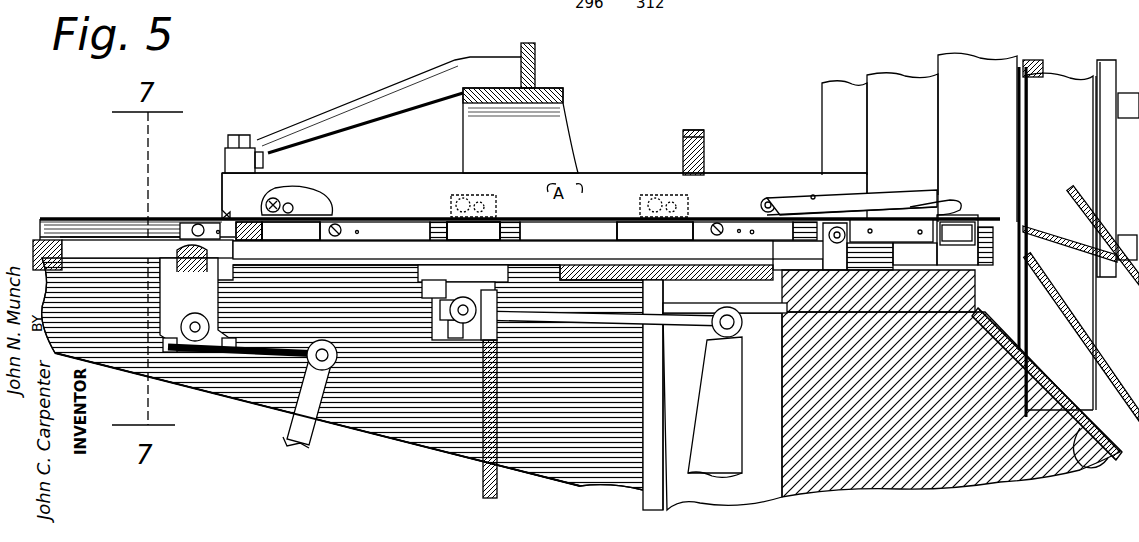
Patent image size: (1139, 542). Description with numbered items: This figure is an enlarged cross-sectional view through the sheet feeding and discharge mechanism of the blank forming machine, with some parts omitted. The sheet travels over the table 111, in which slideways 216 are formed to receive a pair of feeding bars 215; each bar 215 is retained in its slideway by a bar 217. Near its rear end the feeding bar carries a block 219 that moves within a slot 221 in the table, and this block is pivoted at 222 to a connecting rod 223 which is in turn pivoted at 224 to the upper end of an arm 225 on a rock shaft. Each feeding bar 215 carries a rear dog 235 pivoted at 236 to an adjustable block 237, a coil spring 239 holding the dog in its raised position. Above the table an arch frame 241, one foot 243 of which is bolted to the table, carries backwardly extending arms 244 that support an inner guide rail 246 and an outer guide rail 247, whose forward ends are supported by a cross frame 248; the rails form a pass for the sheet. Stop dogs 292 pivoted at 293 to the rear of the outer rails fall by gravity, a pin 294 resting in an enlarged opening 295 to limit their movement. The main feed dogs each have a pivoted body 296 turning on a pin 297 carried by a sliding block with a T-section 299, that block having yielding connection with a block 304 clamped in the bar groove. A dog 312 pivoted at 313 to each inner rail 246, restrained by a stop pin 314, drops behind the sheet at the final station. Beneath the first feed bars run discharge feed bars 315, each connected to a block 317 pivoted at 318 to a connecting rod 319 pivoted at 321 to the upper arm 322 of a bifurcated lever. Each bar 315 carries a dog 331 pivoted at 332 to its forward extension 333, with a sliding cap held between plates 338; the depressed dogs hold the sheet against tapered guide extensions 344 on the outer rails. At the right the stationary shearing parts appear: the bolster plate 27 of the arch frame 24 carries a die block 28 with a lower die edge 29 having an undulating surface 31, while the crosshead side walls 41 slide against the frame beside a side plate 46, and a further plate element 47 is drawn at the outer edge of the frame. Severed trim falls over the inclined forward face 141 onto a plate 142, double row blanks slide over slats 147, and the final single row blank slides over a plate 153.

The arch frame 24 is at (836, 84).
The bolster plate 27 is at (990, 468).
The die block 28 is at (976, 291).
The lower die edge 29 is at (965, 230).
The scroll or undulating surface 31 is at (993, 243).
The side walls 41 is at (980, 68).
The side plate 46 is at (1100, 115).
The end plate 47 is at (1128, 90).
The table 111 is at (553, 462).
The inclined forward face 141 is at (1086, 442).
The plate 142 is at (1075, 354).
The slats 147 is at (1090, 226).
The plate 153 is at (1073, 318).
The feeding bars 215 is at (95, 243).
The slideways 216 is at (48, 247).
The bar 217 is at (113, 230).
The block 219 is at (180, 292).
The slot 221 is at (92, 268).
The pivot 222 is at (190, 328).
The connecting rod 223 is at (240, 357).
The pivot 224 is at (310, 357).
The arm 225 is at (302, 443).
The rear dog 235 is at (226, 214).
The pivot 236 is at (216, 216).
The block 237 is at (175, 235).
The coil spring 239 is at (246, 232).
The frame 241 is at (537, 52).
The foot 243 is at (565, 132).
The backwardly extending arms 244 is at (385, 95).
The inner guide rail 246 is at (550, 160).
The outer guide rail 247 is at (295, 193).
The cross frame 248 is at (705, 138).
The stop dogs 292 is at (318, 207).
The pivot 293 is at (268, 200).
The pin 294 is at (290, 202).
The enlarged opening 295 is at (280, 216).
The pivoted body 296 is at (425, 228).
The pin 297 is at (332, 224).
The T-section 299 is at (752, 229).
The block 304 is at (483, 228).
The dog 312 is at (820, 210).
The pivot 313 is at (768, 198).
The stop pin 314 is at (813, 194).
The feed bars 315 is at (527, 247).
The block 317 is at (445, 292).
The pivot 318 is at (466, 328).
The connecting rod 319 is at (690, 322).
The pivot 321 is at (738, 330).
The upper arm 322 is at (735, 408).
The dog 331 is at (855, 250).
The pivot 332 is at (858, 232).
The forward extension 333 is at (785, 280).
The plates 338 is at (925, 206).
The tapered guide extensions 344 is at (908, 205).